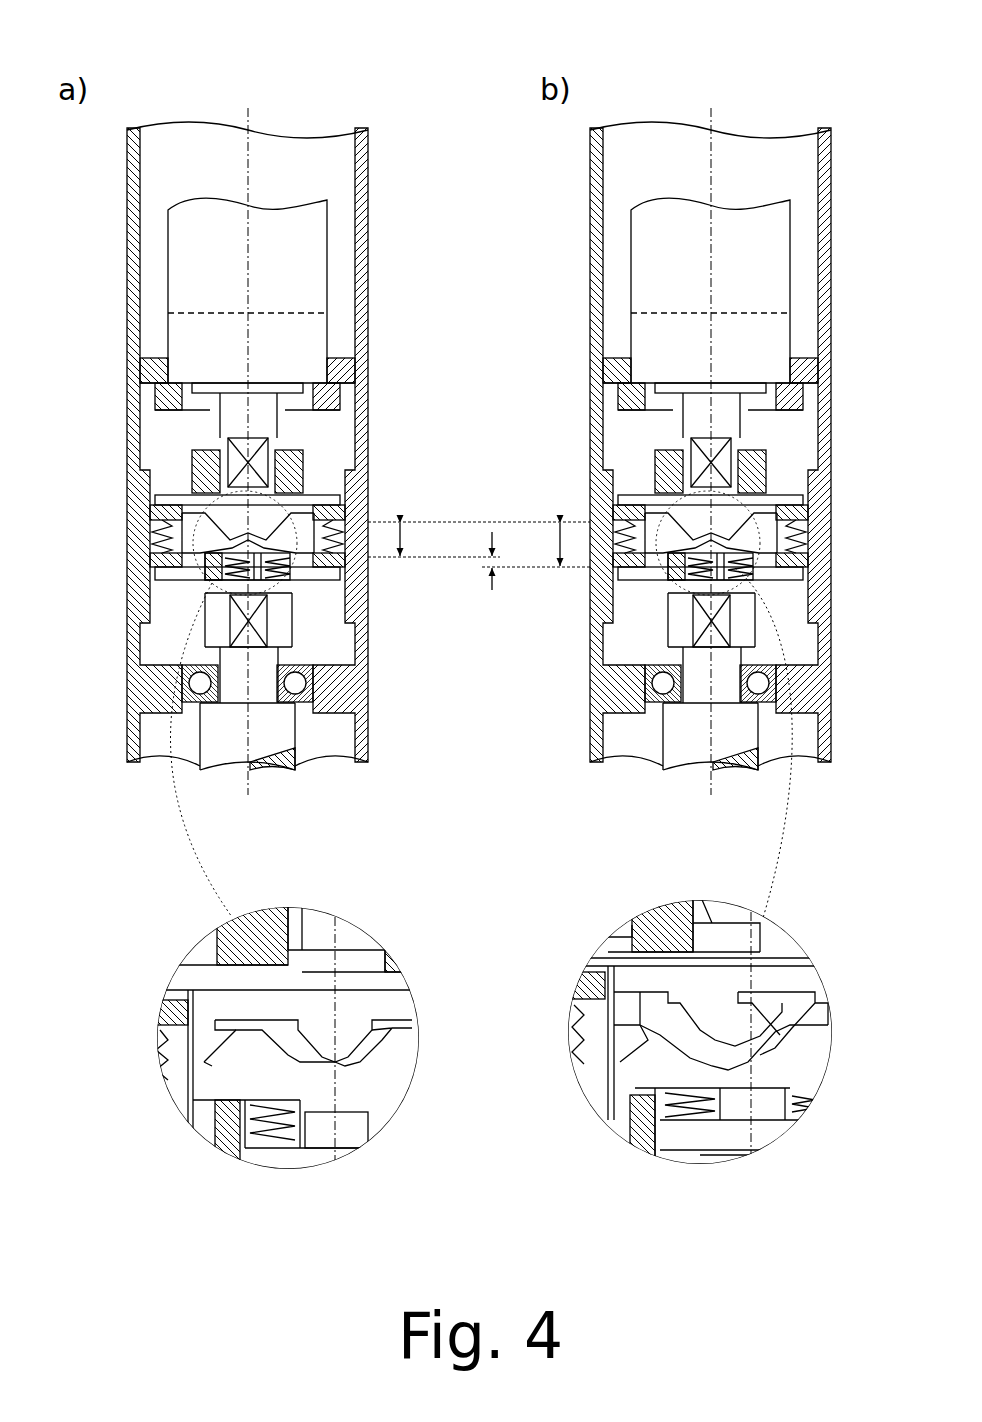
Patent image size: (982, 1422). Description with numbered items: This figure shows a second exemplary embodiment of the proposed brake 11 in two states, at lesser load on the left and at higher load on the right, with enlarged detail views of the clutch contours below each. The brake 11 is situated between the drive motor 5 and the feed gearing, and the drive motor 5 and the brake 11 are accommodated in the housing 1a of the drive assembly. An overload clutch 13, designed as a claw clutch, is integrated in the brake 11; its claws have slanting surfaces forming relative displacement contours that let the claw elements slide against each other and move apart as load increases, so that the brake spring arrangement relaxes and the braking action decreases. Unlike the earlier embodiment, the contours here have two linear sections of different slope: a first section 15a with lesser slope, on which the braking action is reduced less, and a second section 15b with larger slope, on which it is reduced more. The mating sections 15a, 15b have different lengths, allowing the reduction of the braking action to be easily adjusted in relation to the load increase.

The drive motor 5 is at (295, 237).
The brake 11 is at (384, 440).
The overload clutch 13 is at (385, 482).
The housing 1a is at (590, 592).
The first section 15a is at (345, 1030).
The second section 15b is at (340, 1058).